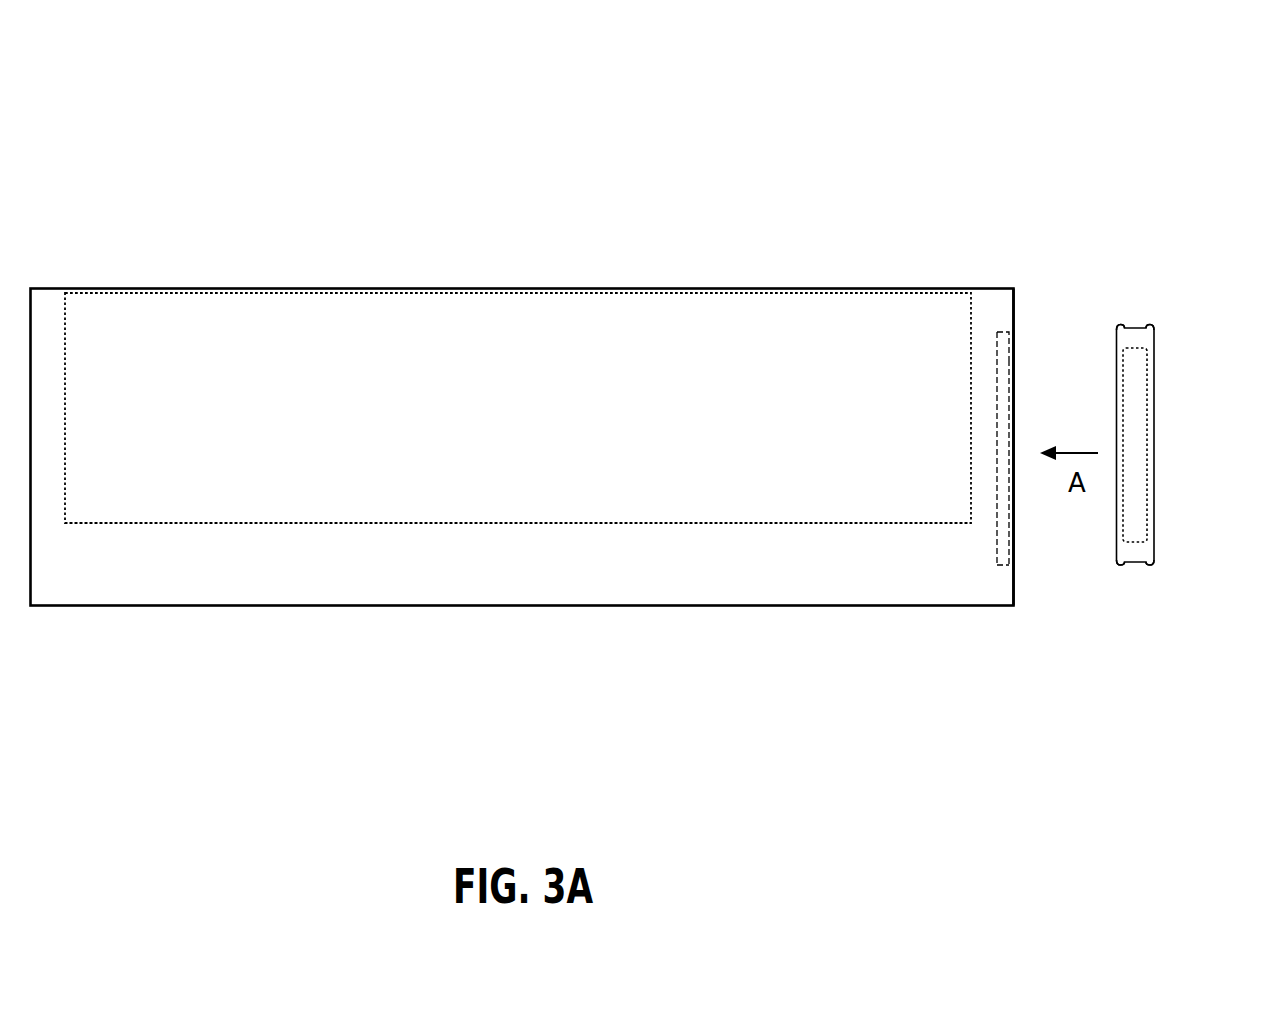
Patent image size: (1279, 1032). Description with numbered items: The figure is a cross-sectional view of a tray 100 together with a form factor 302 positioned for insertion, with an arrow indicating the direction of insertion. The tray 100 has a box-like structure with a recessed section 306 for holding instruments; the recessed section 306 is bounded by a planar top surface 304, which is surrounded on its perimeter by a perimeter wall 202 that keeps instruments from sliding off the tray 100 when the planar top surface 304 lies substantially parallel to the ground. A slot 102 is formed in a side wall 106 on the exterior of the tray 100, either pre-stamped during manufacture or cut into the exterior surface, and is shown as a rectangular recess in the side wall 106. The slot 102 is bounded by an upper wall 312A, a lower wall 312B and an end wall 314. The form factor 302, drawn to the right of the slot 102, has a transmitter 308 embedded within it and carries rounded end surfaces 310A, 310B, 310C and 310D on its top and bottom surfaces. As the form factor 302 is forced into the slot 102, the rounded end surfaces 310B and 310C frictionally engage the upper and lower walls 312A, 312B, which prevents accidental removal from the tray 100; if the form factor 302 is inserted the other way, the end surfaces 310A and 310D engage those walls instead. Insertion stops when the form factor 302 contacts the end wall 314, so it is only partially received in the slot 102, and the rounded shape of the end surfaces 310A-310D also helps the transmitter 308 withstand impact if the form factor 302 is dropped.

The tray 100 is at (40, 271).
The slot 102 is at (1030, 396).
The side wall 106 is at (1024, 590).
The perimeter wall 202 is at (72, 452).
The form factor 302 is at (1160, 413).
The planar top surface 304 is at (623, 508).
The recessed section 306 is at (400, 366).
The transmitter 308 is at (1136, 440).
The end surface 310A is at (1153, 325).
The end surface 310B is at (1121, 322).
The end surface 310C is at (1122, 572).
The end surface 310D is at (1150, 572).
The upper wall of the slot 312A is at (1005, 328).
The lower wall of the slot 312B is at (1007, 572).
The end wall 314 is at (997, 543).